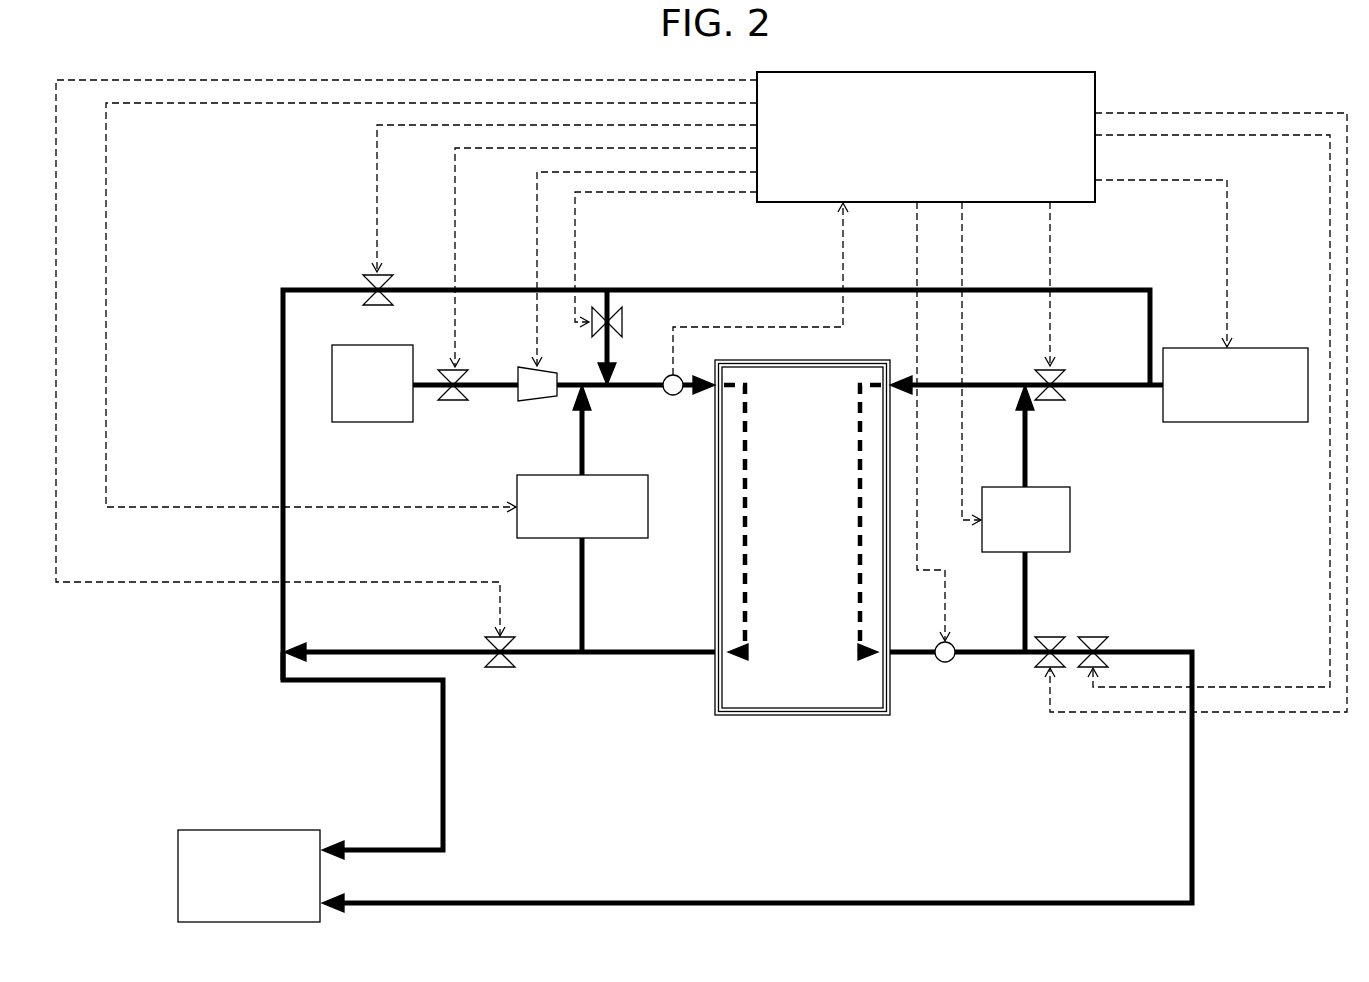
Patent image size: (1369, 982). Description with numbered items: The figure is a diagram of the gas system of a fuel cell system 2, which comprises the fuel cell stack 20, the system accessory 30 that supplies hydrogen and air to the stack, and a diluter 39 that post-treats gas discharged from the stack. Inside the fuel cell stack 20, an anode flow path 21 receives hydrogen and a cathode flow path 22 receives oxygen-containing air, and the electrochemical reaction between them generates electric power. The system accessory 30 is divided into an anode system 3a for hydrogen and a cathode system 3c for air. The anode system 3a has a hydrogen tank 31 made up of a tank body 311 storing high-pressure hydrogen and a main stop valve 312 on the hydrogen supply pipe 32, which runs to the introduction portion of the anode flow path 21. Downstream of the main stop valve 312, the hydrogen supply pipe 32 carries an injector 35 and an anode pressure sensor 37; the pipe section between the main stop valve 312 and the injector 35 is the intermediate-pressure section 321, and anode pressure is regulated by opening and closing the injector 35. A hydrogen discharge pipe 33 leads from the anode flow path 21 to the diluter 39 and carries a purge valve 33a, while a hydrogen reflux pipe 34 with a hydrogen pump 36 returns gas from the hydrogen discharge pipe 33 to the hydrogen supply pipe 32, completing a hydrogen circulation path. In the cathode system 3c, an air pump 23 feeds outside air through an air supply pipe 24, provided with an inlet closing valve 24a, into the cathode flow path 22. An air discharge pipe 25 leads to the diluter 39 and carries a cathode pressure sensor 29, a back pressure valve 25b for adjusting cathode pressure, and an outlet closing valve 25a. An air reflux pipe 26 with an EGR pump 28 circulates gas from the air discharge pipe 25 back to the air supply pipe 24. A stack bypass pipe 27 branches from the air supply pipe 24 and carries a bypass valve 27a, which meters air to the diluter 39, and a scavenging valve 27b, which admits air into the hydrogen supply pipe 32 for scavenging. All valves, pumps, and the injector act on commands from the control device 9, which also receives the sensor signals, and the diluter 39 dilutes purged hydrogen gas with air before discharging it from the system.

The fuel cell system 2 is at (280, 176).
The control device 9 is at (1048, 78).
The fuel cell stack 20 is at (792, 617).
The anode flow path 21 is at (742, 632).
The cathode flow path 22 is at (858, 610).
The air pump 23 is at (1275, 348).
The air supply pipe 24 is at (1108, 384).
The inlet closing valve 24a is at (1062, 370).
The air discharge pipe 25 is at (1192, 648).
The outlet closing valve 25a is at (1050, 636).
The back pressure valve 25b is at (1100, 636).
The air reflux pipe 26 is at (1027, 445).
The stack bypass pipe 27 is at (1100, 288).
The bypass valve 27a is at (390, 280).
The scavenging valve 27b is at (614, 305).
The EGR pump 28 is at (1071, 519).
The cathode pressure sensor 29 is at (946, 663).
The system accessory 30 is at (792, 617).
The anode system 3a is at (737, 764).
The cathode system 3c is at (884, 794).
The hydrogen tank 31 is at (438, 409).
The tank body 311 is at (392, 422).
The main stop valve 312 is at (466, 372).
The hydrogen supply pipe 32 is at (620, 390).
The intermediate-pressure section 321 is at (477, 390).
The hydrogen discharge pipe 33 is at (548, 648).
The purge valve 33a is at (505, 669).
The hydrogen reflux pipe 34 is at (586, 598).
The injector 35 is at (537, 400).
The hydrogen pump 36 is at (645, 538).
The anode pressure sensor 37 is at (677, 396).
The diluter 39 is at (276, 831).